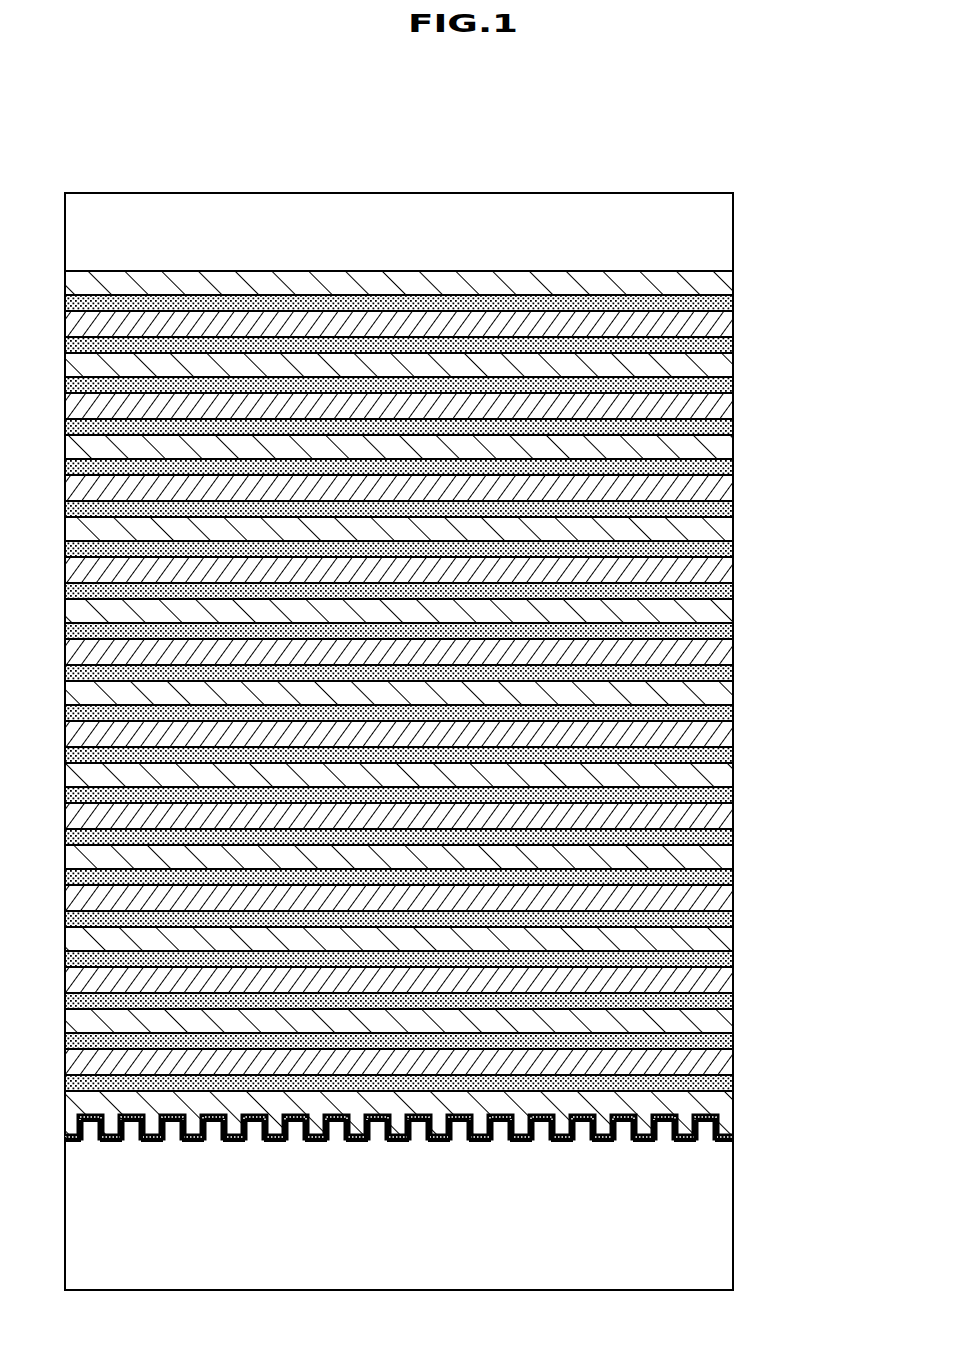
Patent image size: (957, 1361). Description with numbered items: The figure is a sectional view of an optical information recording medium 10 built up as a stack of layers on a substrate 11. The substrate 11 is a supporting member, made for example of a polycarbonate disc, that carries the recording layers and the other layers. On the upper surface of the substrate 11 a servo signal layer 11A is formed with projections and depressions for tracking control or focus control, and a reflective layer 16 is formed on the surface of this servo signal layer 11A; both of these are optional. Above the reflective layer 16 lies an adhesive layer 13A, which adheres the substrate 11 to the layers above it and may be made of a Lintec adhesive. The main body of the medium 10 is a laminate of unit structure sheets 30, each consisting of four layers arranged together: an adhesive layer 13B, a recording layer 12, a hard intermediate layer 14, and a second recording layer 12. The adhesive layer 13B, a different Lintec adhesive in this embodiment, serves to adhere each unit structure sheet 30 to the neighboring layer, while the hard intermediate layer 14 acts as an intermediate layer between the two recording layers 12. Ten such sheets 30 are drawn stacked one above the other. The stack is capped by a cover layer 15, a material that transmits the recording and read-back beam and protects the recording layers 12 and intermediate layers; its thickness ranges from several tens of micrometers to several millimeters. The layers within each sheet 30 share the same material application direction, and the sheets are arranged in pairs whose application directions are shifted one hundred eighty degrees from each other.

The optical information recording medium 10 is at (643, 159).
The substrate 11 is at (720, 1232).
The servo signal layer 11A is at (705, 1135).
The recording layer 12 is at (723, 298).
The adhesive layer 13A is at (720, 1104).
The adhesive layer 13B is at (720, 283).
The hard intermediate layer 14 is at (720, 323).
The cover layer 15 is at (720, 235).
The reflective layer 16 is at (720, 1128).
The unit structure sheet 30 is at (467, 681).